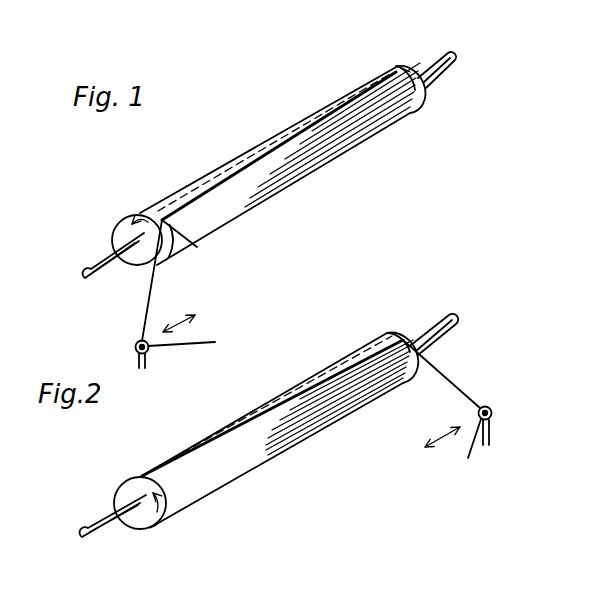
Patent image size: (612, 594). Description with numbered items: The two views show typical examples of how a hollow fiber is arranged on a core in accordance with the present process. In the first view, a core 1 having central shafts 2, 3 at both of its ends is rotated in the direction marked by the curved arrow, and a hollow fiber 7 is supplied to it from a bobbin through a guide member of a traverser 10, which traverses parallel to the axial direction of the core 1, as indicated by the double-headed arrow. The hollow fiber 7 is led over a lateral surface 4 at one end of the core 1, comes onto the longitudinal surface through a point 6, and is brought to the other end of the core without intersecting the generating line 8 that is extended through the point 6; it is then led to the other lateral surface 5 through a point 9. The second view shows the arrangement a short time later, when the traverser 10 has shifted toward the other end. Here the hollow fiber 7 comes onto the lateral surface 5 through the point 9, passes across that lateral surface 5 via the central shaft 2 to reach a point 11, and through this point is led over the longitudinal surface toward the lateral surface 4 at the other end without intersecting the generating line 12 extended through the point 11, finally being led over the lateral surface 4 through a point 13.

In FIG. 1, the core 1 is at (246, 152).
In FIG. 1, the central shaft 2 is at (102, 261).
In FIG. 2, the central shaft 2 is at (103, 518).
In FIG. 1, the central shaft 3 is at (447, 69).
In FIG. 1, the lateral surface 4 is at (388, 65).
In FIG. 2, the lateral surface 4 is at (390, 333).
In FIG. 1, the lateral surface 5 is at (150, 209).
In FIG. 2, the lateral surface 5 is at (165, 498).
In FIG. 1, the point 6 is at (400, 66).
In FIG. 1, the hollow fiber 7 is at (226, 184).
In FIG. 2, the hollow fiber 7 is at (212, 439).
In FIG. 1, the generating line 8 is at (300, 126).
In FIG. 1, the point 9 is at (197, 248).
In FIG. 2, the point 9 is at (152, 523).
In FIG. 1, the traverser 10 is at (137, 340).
In FIG. 2, the traverser 10 is at (490, 406).
In FIG. 2, the point 11 is at (140, 474).
In FIG. 2, the generating line 12 is at (274, 398).
In FIG. 2, the point 13 is at (405, 335).